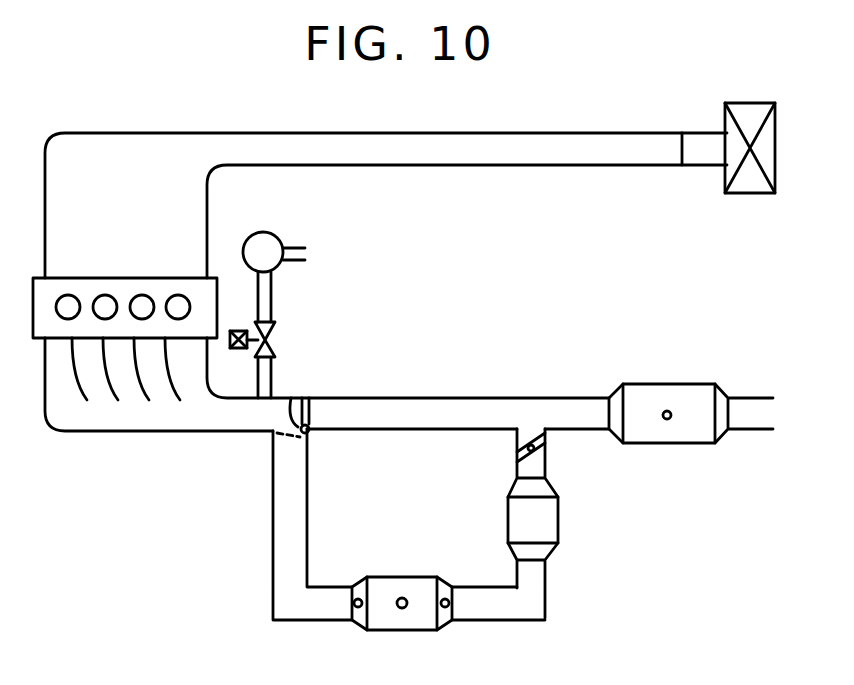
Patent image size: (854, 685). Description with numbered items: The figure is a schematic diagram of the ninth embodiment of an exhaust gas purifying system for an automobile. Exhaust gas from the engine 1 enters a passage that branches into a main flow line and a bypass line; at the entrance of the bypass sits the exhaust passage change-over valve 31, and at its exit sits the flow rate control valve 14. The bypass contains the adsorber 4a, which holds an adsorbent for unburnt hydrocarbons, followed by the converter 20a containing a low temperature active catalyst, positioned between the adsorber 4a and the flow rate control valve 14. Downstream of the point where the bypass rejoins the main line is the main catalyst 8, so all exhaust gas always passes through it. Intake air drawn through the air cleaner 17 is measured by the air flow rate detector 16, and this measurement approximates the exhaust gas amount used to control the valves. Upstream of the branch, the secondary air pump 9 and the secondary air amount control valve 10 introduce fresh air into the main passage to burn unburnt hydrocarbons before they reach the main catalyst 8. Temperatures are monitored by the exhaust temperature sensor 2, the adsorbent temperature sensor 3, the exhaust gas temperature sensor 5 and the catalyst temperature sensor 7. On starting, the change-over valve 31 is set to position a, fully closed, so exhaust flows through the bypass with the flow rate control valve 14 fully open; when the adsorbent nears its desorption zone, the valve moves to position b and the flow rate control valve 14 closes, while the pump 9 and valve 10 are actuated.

The engine 1 is at (127, 278).
The exhaust temperature sensor 2 is at (357, 598).
The adsorbent temperature sensor 3 is at (401, 597).
The adsorber 4a is at (420, 594).
The exhaust gas temperature sensor 5 is at (446, 598).
The catalyst temperature sensor 7 is at (667, 421).
The main catalyst 8 is at (673, 398).
The secondary air pump 9 is at (262, 242).
The secondary air amount control valve 10 is at (277, 338).
The flow rate control valve 14 is at (538, 467).
The air flow rate detector 16 is at (693, 166).
The air cleaner 17 is at (750, 194).
The converter 20a is at (535, 528).
The exhaust passage change-over valve 31 is at (293, 399).
The position a is at (312, 398).
The position b is at (278, 441).